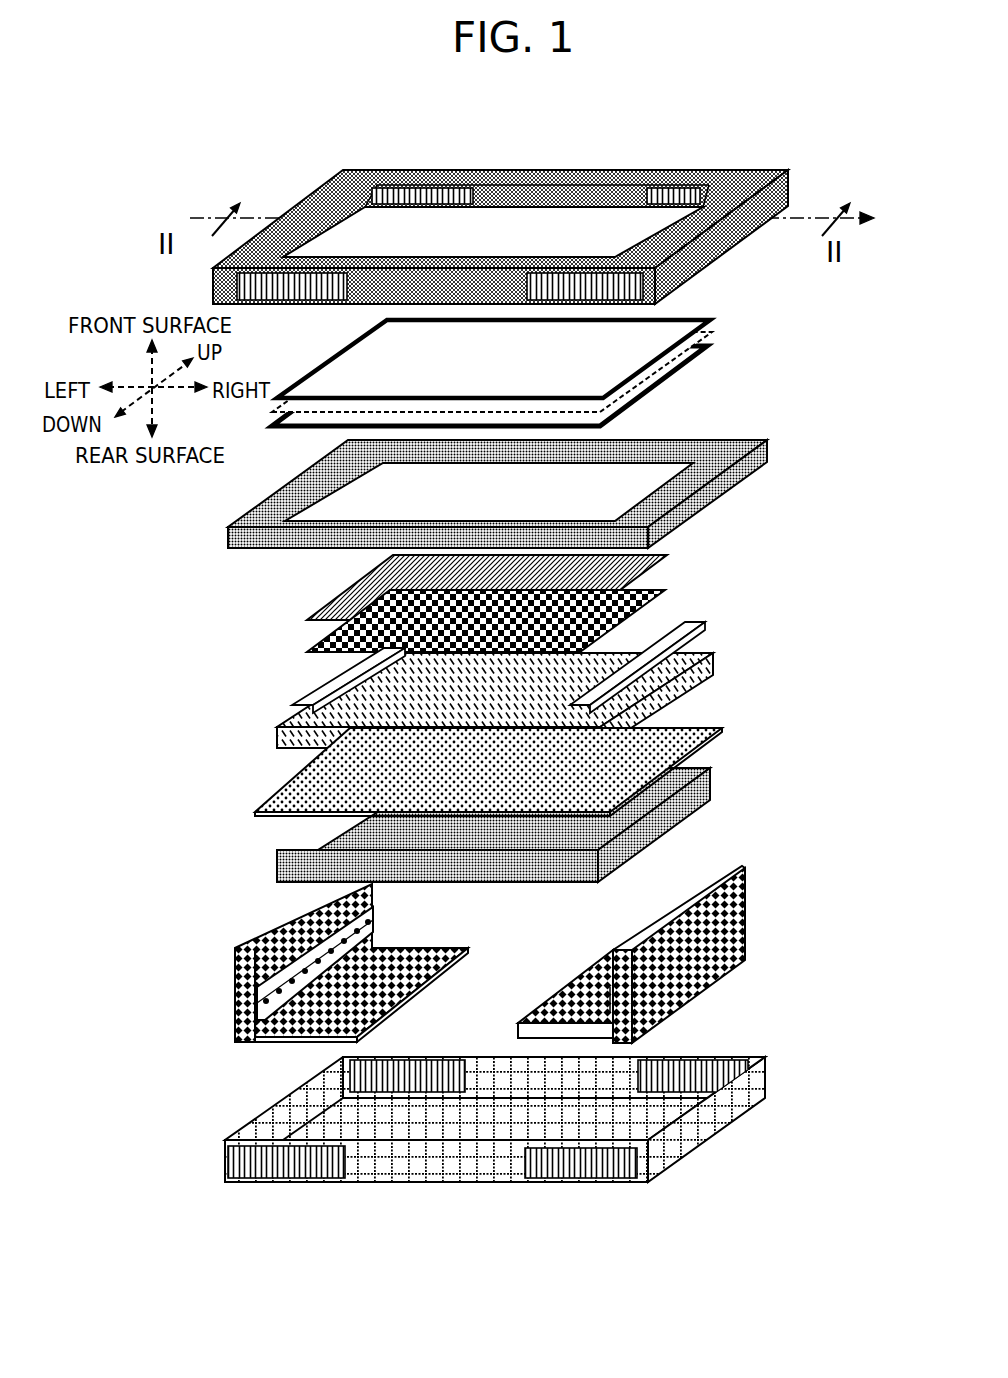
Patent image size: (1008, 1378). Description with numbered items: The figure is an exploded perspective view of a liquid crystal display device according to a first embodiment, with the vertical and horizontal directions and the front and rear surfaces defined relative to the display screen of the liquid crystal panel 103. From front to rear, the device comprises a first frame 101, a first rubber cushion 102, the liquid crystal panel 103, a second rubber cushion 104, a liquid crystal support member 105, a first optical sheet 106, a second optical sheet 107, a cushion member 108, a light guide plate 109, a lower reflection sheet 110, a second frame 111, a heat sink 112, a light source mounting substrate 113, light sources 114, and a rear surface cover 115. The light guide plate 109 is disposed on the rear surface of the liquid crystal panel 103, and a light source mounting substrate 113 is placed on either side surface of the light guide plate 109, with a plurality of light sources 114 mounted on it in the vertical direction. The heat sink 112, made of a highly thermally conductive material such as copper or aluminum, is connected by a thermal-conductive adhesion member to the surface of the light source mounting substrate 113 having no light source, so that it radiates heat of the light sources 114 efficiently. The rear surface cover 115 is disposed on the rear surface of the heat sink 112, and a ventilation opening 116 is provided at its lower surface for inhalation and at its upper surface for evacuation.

The first frame 101 is at (599, 172).
The first rubber cushion 102 is at (700, 322).
The liquid crystal panel 103 is at (706, 336).
The second rubber cushion 104 is at (700, 350).
The liquid crystal support member 105 is at (733, 487).
The first optical sheet 106 is at (660, 558).
The second optical sheet 107 is at (318, 641).
The cushion member 108 is at (702, 628).
The light guide plate 109 is at (277, 737).
The lower reflection sheet 110 is at (712, 727).
The second frame 111 is at (700, 816).
The heat sink 112 is at (735, 922).
The light source mounting substrate 113 is at (375, 915).
The light source 114 is at (235, 988).
The rear surface cover 115 is at (717, 1110).
The ventilation opening 116 is at (637, 1183).